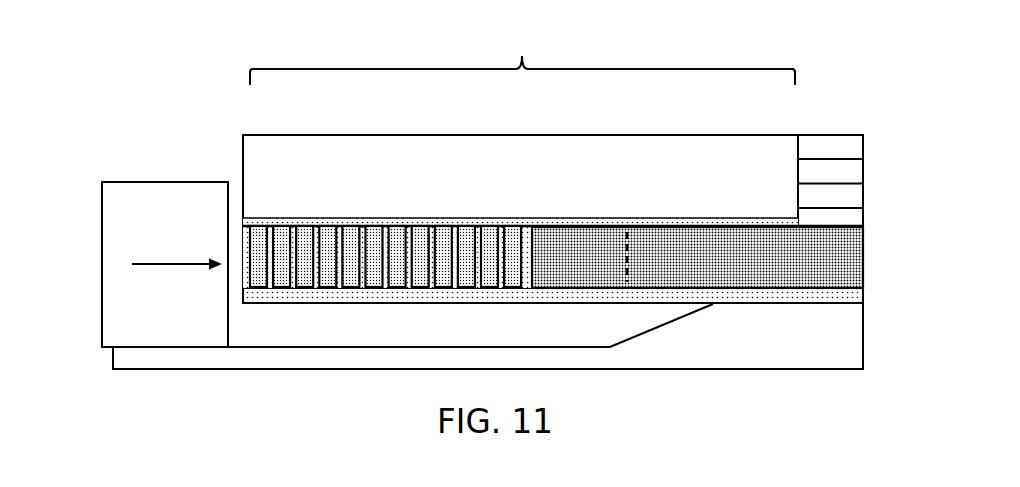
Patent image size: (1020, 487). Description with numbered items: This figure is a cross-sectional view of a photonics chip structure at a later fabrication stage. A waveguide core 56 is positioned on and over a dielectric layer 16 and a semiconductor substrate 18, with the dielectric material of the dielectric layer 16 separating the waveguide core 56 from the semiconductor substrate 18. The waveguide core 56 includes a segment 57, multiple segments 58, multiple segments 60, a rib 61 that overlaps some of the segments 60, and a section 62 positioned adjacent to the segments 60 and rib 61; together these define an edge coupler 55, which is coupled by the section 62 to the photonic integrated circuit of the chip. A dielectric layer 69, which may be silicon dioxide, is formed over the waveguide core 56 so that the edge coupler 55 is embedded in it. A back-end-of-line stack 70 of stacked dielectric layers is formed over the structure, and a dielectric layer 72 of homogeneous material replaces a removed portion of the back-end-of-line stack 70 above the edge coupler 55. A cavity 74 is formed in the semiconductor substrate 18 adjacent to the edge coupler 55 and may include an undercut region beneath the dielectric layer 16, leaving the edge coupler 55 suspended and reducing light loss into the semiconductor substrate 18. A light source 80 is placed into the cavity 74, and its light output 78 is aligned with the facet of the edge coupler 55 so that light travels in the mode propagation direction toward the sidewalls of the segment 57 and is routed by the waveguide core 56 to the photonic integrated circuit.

The dielectric layer 16 is at (827, 300).
The semiconductor substrate 18 is at (815, 343).
The edge coupler 55 is at (522, 54).
The waveguide core 56 is at (870, 263).
The segment 57 is at (256, 250).
The segments 58 is at (347, 247).
The segments 60 is at (463, 257).
The rib 61 is at (585, 248).
The section 62 is at (682, 253).
The dielectric layer 69 is at (525, 247).
The back-end-of-line stack 70 is at (872, 165).
The dielectric layer 72 is at (740, 162).
The cavity 74 is at (264, 339).
The light output 78 is at (178, 266).
The light source 80 is at (168, 229).